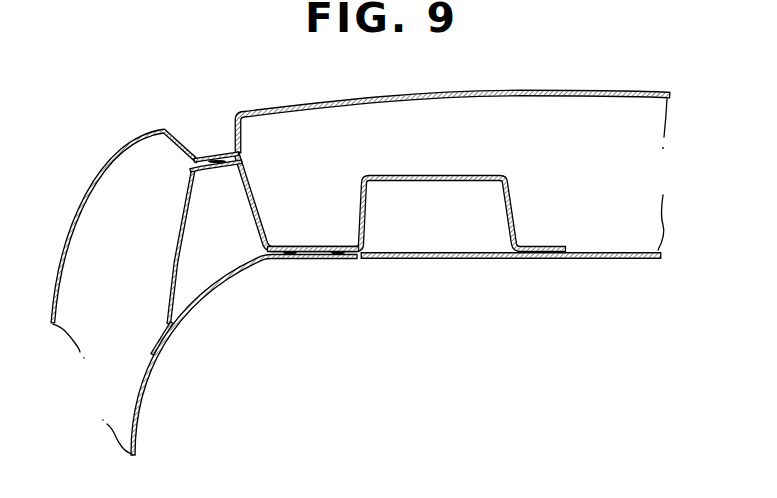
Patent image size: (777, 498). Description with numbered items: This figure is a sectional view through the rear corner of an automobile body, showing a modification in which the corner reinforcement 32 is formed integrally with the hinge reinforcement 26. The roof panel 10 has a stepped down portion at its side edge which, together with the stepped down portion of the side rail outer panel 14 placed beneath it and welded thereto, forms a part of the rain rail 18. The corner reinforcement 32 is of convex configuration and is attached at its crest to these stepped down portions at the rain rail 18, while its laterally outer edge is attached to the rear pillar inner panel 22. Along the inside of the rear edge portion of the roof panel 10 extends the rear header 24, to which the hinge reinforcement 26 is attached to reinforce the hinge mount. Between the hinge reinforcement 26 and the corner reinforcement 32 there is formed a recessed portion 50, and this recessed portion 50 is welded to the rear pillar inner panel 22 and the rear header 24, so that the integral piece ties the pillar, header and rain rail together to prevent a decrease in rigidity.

The roof panel 10 is at (531, 90).
The side rail outer panel 14 is at (105, 164).
The rain rail 18 is at (206, 146).
The rear pillar inner panel 22 is at (145, 389).
The rear header 24 is at (608, 260).
The hinge reinforcement 26 is at (514, 205).
The corner reinforcement 32 is at (174, 252).
The recessed portion 50 is at (306, 244).